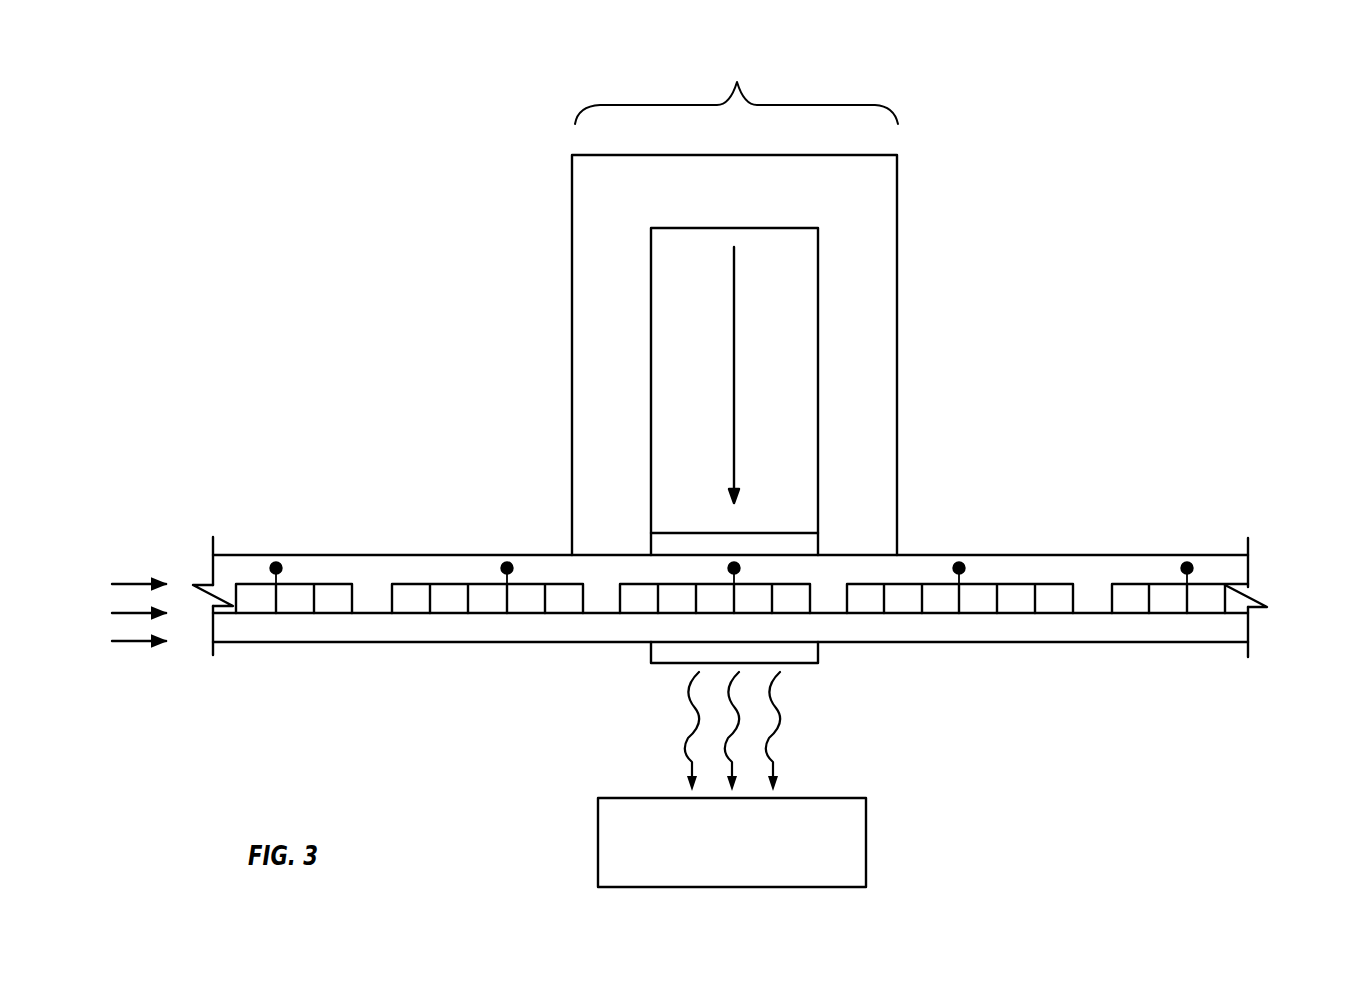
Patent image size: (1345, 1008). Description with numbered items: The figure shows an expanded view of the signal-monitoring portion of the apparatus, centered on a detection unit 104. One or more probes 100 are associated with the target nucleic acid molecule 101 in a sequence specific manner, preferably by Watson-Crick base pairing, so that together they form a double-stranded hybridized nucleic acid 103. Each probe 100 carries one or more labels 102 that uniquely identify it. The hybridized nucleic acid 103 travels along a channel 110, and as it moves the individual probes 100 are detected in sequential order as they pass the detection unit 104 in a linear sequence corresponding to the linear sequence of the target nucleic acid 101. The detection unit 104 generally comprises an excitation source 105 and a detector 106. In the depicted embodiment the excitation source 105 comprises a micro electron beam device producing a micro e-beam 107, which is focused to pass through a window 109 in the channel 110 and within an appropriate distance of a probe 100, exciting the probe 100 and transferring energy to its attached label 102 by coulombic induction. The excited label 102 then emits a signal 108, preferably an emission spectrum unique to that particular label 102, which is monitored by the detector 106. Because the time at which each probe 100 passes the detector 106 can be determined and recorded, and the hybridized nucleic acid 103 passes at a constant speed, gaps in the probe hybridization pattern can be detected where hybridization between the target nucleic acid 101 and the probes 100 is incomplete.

The probes 100 is at (412, 583).
The target nucleic acid molecule 101 is at (490, 602).
The labels 102 is at (505, 565).
The hybridized nucleic acid 103 is at (1283, 577).
The detection unit 104 is at (736, 90).
The excitation source 105 is at (898, 325).
The detector 106 is at (853, 849).
The micro e-beam 107 is at (733, 275).
The signal 108 is at (783, 717).
The window 109 is at (708, 542).
The channel 110 is at (315, 553).